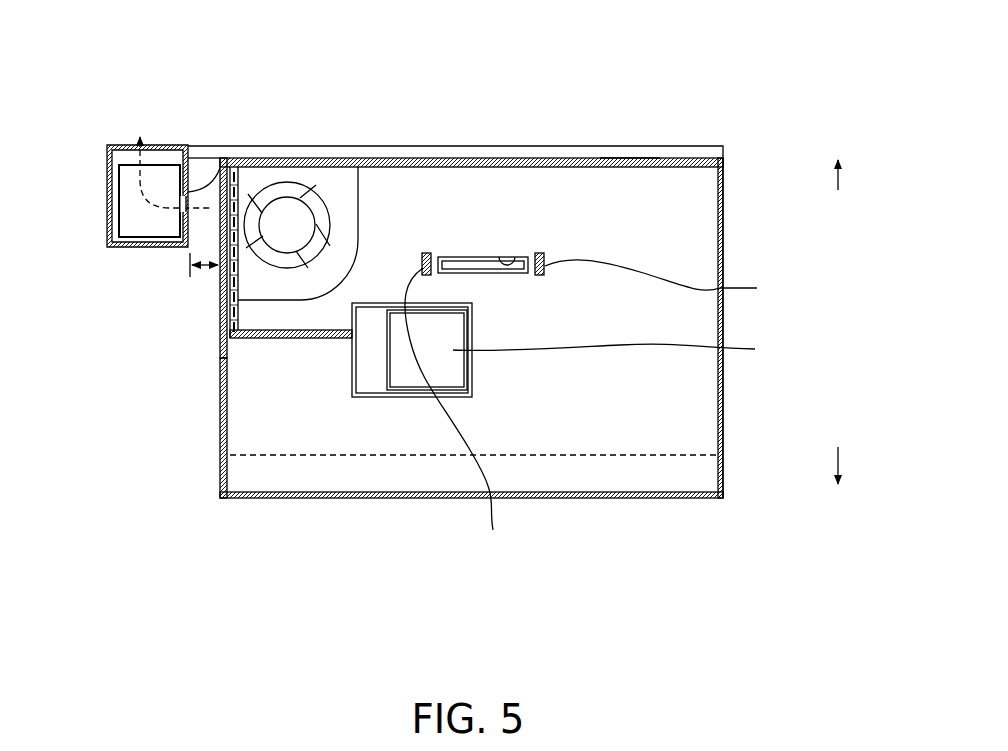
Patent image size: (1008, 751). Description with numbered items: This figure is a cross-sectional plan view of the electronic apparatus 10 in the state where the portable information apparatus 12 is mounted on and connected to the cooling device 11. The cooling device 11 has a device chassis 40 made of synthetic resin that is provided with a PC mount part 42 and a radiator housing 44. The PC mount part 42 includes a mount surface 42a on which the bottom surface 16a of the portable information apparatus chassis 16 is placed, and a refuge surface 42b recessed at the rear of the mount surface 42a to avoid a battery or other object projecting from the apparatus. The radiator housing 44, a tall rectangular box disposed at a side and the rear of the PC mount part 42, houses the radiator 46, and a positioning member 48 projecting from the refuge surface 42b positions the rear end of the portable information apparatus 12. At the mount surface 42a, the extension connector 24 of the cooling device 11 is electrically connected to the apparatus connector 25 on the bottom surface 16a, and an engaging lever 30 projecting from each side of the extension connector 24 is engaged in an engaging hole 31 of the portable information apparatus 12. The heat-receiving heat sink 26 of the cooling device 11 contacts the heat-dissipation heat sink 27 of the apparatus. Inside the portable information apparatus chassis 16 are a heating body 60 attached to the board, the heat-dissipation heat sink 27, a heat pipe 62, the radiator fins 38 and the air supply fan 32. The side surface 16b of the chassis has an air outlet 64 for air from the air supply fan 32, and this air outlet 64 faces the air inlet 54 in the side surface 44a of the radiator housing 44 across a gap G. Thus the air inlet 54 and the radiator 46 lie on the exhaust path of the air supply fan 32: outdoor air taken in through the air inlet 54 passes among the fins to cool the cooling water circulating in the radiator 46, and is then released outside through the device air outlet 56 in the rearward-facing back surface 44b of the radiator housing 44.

The electronic apparatus 10 is at (406, 29).
The cooling device 11 is at (319, 180).
The portable information apparatus 12 is at (190, 507).
The portable information apparatus chassis 16 is at (634, 152).
The bottom surface 16a is at (233, 398).
The side surface 16b is at (222, 347).
The extension connector 24 is at (483, 257).
The apparatus connector 25 is at (505, 259).
The heat-receiving heat sink 26 is at (427, 390).
The heat-dissipation heat sink 27 is at (371, 383).
The engaging lever 30 is at (426, 252).
The engaging hole 31 is at (595, 408).
The air supply fan 32 is at (341, 204).
The radiator fins 38 is at (232, 178).
The device chassis 40 is at (682, 139).
The PC mount part 42 is at (222, 375).
The mount surface 42a is at (556, 457).
The refuge surface 42b is at (613, 157).
The radiator housing 44 is at (125, 247).
The side surface 44a is at (216, 158).
The back surface 44b is at (186, 150).
The radiator 46 is at (150, 237).
The positioning member 48 is at (212, 150).
The air inlet 54 is at (194, 190).
The device air outlet 56 is at (155, 146).
The heating body 60 is at (619, 350).
The heat pipe 62 is at (292, 340).
The air outlet 64 is at (236, 217).
The gap G is at (204, 275).